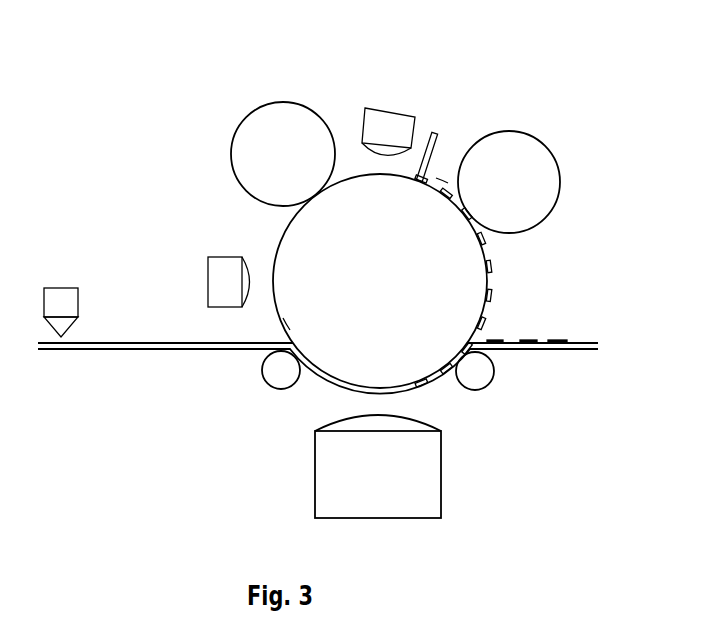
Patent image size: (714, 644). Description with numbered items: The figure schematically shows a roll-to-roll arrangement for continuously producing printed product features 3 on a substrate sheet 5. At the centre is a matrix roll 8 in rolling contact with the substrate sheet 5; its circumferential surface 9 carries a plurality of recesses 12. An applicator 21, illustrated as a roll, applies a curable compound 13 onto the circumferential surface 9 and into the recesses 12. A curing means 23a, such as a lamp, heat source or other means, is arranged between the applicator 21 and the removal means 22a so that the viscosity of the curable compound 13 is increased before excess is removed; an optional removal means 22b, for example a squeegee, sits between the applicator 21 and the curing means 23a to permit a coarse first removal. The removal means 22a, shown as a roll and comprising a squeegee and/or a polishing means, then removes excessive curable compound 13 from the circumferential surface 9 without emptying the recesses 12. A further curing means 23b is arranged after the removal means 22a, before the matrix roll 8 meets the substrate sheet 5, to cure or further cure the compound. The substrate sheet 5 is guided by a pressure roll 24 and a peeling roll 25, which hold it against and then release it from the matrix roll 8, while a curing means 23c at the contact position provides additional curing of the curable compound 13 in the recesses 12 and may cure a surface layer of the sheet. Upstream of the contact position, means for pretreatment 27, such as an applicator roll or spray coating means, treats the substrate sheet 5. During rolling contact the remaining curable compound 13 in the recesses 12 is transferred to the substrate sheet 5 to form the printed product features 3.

The printed product features 3 is at (554, 336).
The substrate sheet 5 is at (225, 348).
The matrix roll 8 is at (458, 280).
The circumferential surface 9 is at (283, 322).
The recesses 12 is at (487, 290).
The curable compound 13 is at (442, 182).
The applicator 21 is at (525, 172).
The removal means 22a is at (262, 138).
The removal means 22b is at (435, 135).
The curing means 23a is at (383, 122).
The curing means 23b is at (222, 277).
The curing means 23c is at (415, 481).
The pressure roll 24 is at (280, 368).
The peeling roll 25 is at (475, 377).
The means for pretreatment 27 is at (63, 300).